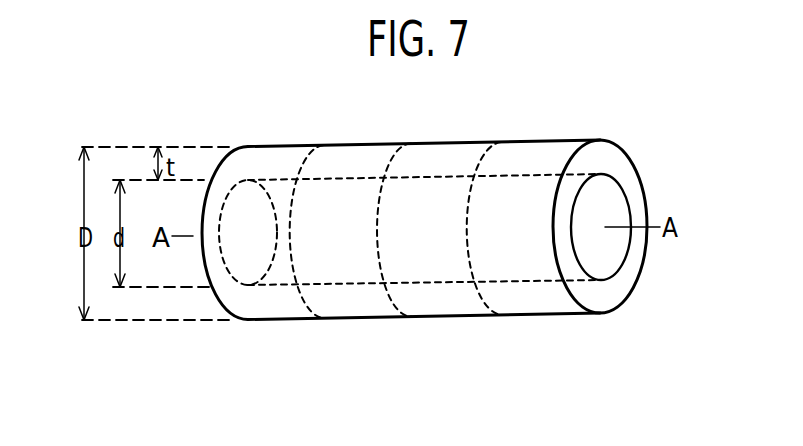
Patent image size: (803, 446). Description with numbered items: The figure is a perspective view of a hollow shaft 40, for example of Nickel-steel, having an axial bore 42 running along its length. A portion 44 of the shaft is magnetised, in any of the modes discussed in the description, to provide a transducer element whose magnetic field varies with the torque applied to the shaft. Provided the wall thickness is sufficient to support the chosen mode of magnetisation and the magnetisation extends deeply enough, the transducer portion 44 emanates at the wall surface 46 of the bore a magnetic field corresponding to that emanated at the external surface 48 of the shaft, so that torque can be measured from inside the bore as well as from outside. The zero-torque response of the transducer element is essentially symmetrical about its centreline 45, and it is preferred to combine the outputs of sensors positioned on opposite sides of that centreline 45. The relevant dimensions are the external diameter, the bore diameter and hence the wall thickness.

The hollow shaft 40 is at (590, 139).
The axial bore 42 is at (600, 202).
The magnetised portion 44 is at (507, 138).
The centreline 45 is at (392, 296).
The wall surface 46 is at (612, 262).
The external surface 48 is at (266, 146).